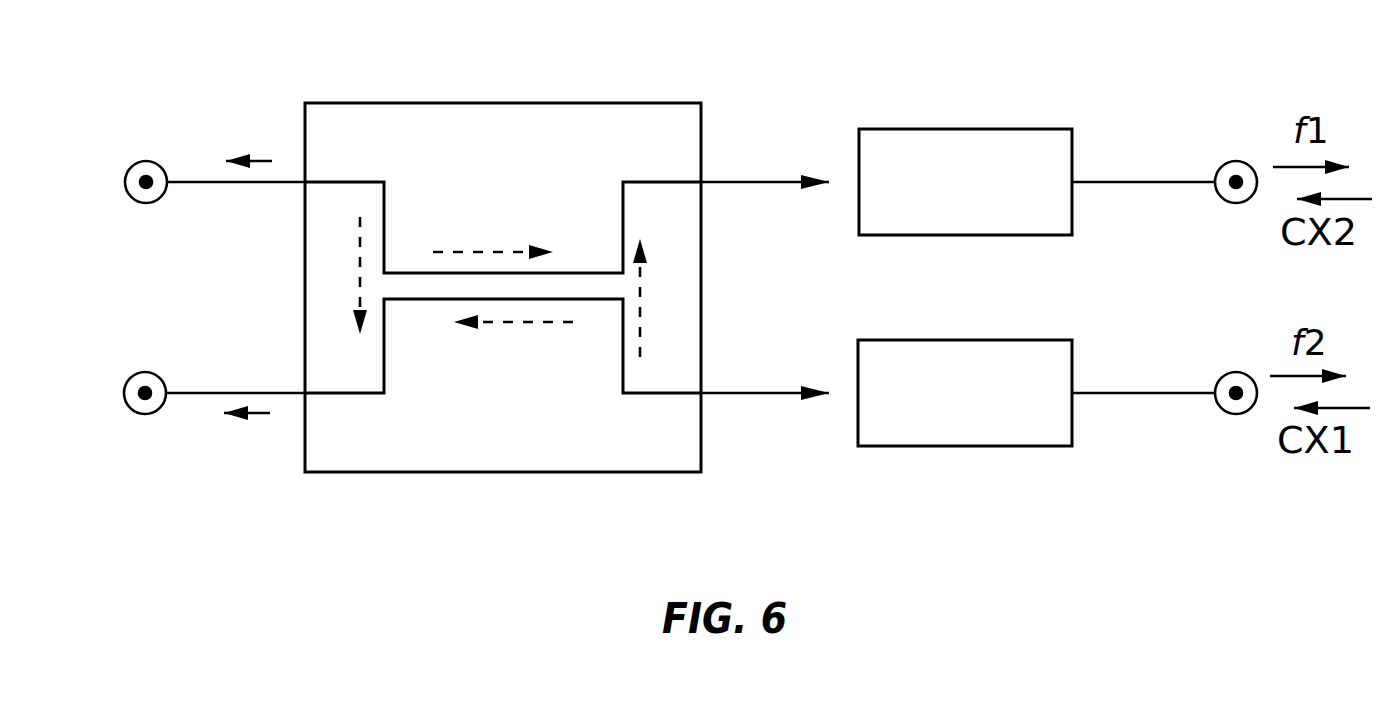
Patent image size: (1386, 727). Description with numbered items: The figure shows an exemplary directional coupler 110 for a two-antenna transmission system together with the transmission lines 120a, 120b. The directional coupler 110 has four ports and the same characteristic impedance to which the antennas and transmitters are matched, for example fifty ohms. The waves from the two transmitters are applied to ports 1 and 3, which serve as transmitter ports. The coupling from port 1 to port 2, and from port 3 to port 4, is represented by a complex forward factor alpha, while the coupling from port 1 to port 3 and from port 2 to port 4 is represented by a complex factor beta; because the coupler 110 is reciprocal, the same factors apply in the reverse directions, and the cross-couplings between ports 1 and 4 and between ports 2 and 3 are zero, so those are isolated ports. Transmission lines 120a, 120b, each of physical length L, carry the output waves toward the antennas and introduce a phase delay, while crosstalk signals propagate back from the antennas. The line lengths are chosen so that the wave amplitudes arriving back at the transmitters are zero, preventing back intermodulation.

The directional coupler 110 is at (596, 103).
The transmission line 120a is at (919, 224).
The transmission line 120b is at (919, 436).
The port 1 is at (186, 155).
The port 2 is at (765, 152).
The port 3 is at (187, 419).
The port 4 is at (765, 420).